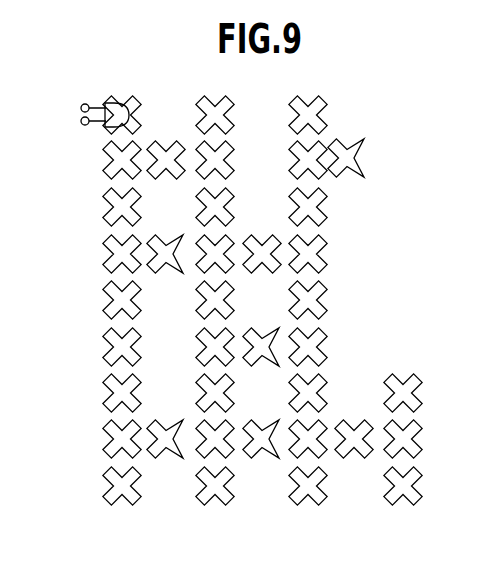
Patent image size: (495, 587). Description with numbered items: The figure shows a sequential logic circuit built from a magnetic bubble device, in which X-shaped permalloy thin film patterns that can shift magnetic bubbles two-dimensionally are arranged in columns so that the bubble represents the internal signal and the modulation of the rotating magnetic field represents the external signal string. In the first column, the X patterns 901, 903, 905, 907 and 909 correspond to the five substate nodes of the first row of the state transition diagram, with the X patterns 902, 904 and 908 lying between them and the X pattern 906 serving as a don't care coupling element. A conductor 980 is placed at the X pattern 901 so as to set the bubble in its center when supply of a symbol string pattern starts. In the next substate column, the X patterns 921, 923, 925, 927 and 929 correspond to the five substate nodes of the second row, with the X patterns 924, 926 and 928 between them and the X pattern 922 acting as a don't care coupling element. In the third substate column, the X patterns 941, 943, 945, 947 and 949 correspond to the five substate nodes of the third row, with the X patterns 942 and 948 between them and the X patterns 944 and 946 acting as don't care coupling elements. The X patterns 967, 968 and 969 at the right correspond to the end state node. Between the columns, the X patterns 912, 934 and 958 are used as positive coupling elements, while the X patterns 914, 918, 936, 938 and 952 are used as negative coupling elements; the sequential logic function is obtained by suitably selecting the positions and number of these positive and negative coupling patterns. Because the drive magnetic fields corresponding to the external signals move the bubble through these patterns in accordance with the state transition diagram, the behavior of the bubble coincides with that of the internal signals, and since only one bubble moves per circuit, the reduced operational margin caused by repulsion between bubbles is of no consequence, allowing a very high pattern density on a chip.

The X pattern 901 is at (116, 97).
The X pattern 902 is at (108, 162).
The X pattern 903 is at (108, 210).
The X pattern 904 is at (108, 257).
The X pattern 905 is at (108, 303).
The X pattern 906 is at (108, 350).
The X pattern 907 is at (108, 396).
The X pattern 908 is at (108, 442).
The X pattern 909 is at (106, 488).
The X pattern 912 is at (156, 143).
The X pattern 914 is at (156, 272).
The X pattern 918 is at (154, 462).
The X pattern 921 is at (223, 96).
The X pattern 922 is at (234, 168).
The X pattern 923 is at (200, 212).
The X pattern 924 is at (199, 247).
The X pattern 925 is at (203, 312).
The X pattern 926 is at (200, 350).
The X pattern 927 is at (200, 385).
The X pattern 928 is at (199, 428).
The X pattern 929 is at (226, 503).
The X pattern 934 is at (247, 272).
The X pattern 936 is at (253, 332).
The X pattern 938 is at (253, 424).
The X pattern 941 is at (317, 96).
The X pattern 942 is at (292, 150).
The X pattern 943 is at (329, 211).
The X pattern 944 is at (328, 243).
The X pattern 945 is at (329, 311).
The X pattern 946 is at (329, 353).
The X pattern 947 is at (329, 398).
The X pattern 948 is at (330, 455).
The X pattern 949 is at (313, 506).
The X pattern 952 is at (358, 146).
The X pattern 958 is at (373, 406).
The X pattern 967 is at (421, 404).
The X pattern 968 is at (422, 449).
The X pattern 969 is at (420, 493).
The conductor 980 is at (82, 125).